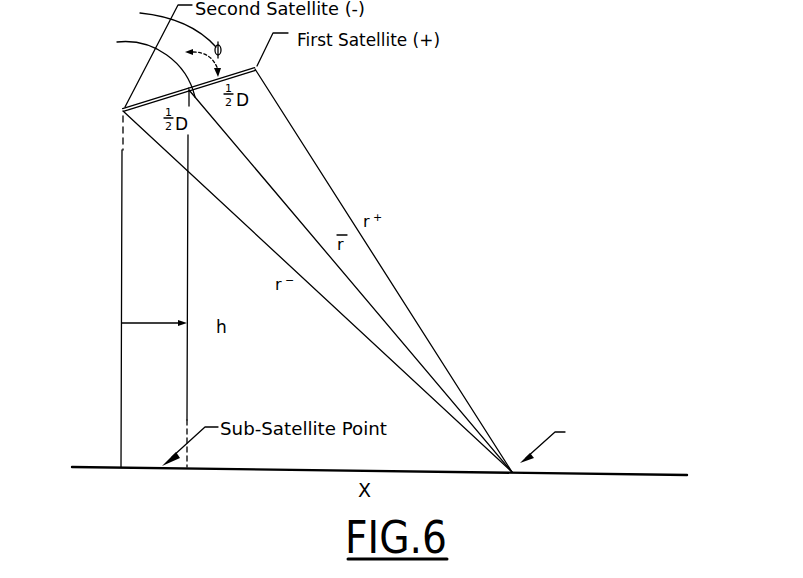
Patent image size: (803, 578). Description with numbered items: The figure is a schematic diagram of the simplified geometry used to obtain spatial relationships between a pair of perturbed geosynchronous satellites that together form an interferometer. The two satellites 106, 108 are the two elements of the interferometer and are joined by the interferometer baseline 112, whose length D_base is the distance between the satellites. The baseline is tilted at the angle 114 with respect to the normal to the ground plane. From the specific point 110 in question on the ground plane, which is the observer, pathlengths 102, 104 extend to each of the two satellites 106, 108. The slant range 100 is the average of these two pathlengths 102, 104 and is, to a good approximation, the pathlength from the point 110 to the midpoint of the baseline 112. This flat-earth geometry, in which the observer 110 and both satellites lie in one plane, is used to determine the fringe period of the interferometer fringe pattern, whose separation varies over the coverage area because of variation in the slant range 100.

The slant range 100 is at (278, 194).
The pathlength 102 is at (375, 257).
The pathlength 104 is at (350, 322).
The satellite 106 is at (258, 68).
The satellite 108 is at (121, 112).
The point on the ground plane 110 is at (516, 469).
The interferometer baseline 112 is at (131, 59).
The angle of the interferometer baseline 114 is at (156, 23).